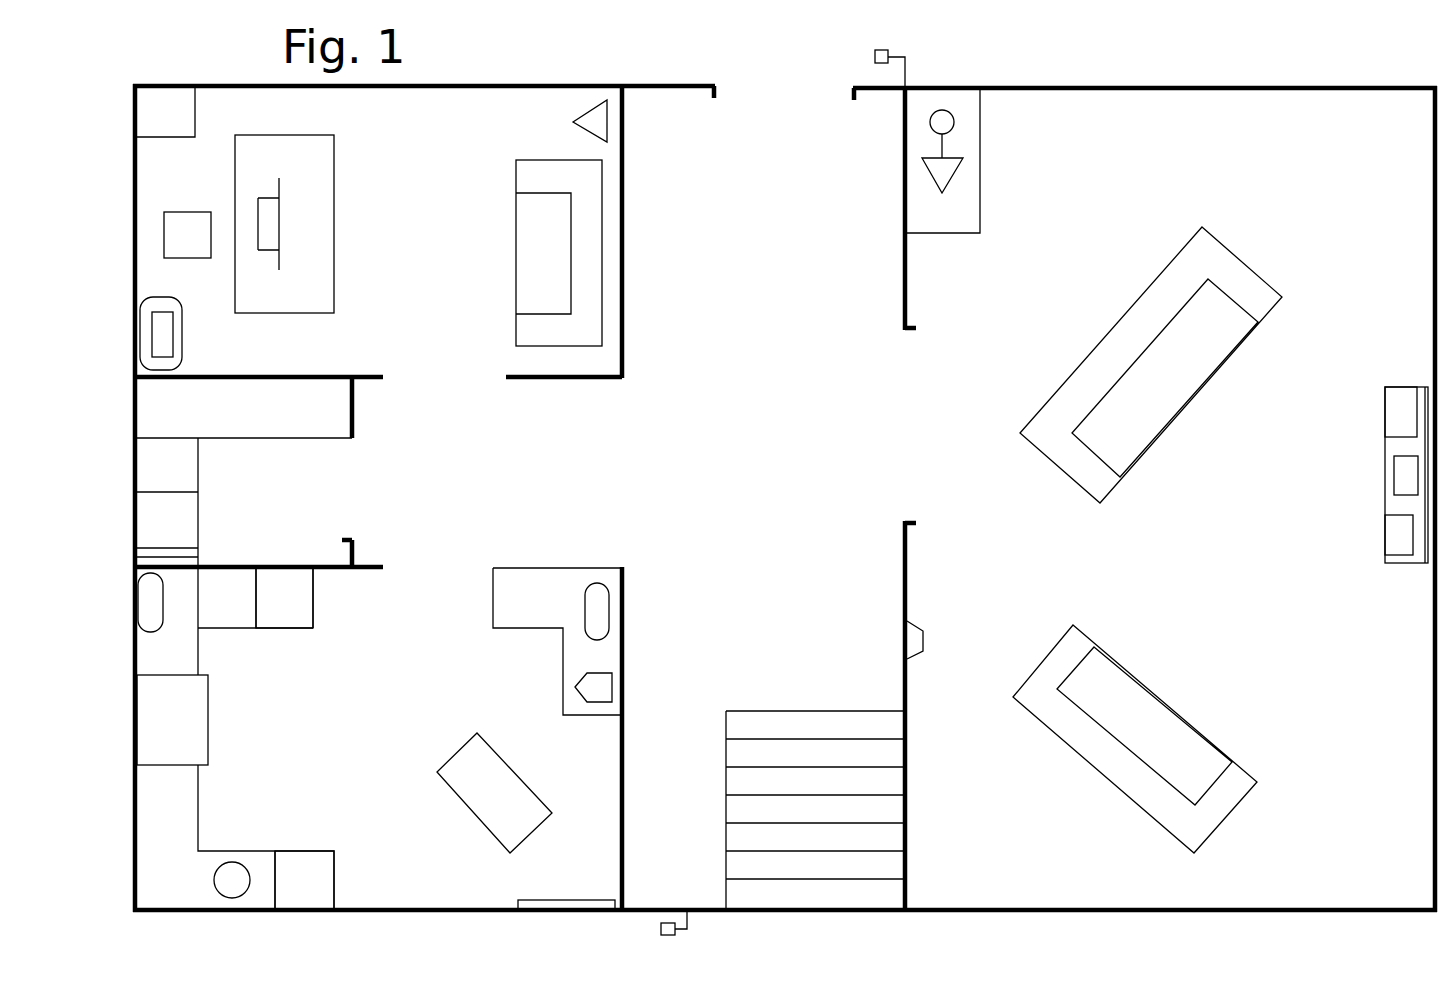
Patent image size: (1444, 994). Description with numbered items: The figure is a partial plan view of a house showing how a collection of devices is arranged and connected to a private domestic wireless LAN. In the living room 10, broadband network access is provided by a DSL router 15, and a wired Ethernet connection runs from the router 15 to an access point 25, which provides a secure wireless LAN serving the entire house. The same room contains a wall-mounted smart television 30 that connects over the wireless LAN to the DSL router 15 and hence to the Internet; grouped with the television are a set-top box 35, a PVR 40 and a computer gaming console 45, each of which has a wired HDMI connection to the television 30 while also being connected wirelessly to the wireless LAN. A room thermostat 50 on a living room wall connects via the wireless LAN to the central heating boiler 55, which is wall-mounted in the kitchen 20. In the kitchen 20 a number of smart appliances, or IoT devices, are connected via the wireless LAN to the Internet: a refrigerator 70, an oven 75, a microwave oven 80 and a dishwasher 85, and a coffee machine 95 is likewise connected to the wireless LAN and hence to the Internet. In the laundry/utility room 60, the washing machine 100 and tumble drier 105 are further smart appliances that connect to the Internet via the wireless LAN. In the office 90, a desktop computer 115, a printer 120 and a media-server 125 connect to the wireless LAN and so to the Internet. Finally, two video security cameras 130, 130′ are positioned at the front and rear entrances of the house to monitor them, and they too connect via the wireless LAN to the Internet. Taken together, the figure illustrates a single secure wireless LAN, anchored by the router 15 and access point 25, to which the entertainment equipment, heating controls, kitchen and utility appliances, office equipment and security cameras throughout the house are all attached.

The living room 10 is at (1290, 125).
The DSL router 15 is at (954, 118).
The kitchen 20 is at (590, 773).
The access point 25 is at (948, 172).
The smart television 30 is at (1427, 550).
The set-top box 35 is at (1400, 528).
The PVR 40 is at (1397, 412).
The computer gaming console 45 is at (1405, 470).
The room thermostat 50 is at (918, 640).
The central heating boiler 55 is at (157, 603).
The laundry/utility room 60 is at (323, 519).
The refrigerator 70 is at (185, 723).
The oven 75 is at (300, 602).
The microwave oven 80 is at (595, 619).
The dishwasher 85 is at (305, 865).
The office 90 is at (456, 349).
The coffee machine 95 is at (593, 686).
The washing machine 100 is at (175, 527).
The tumble drier 105 is at (168, 471).
The desktop computer 115 is at (279, 192).
The printer 120 is at (173, 341).
The media-server 125 is at (590, 122).
The video security camera 130 is at (875, 57).
The video security camera 130′ is at (661, 929).